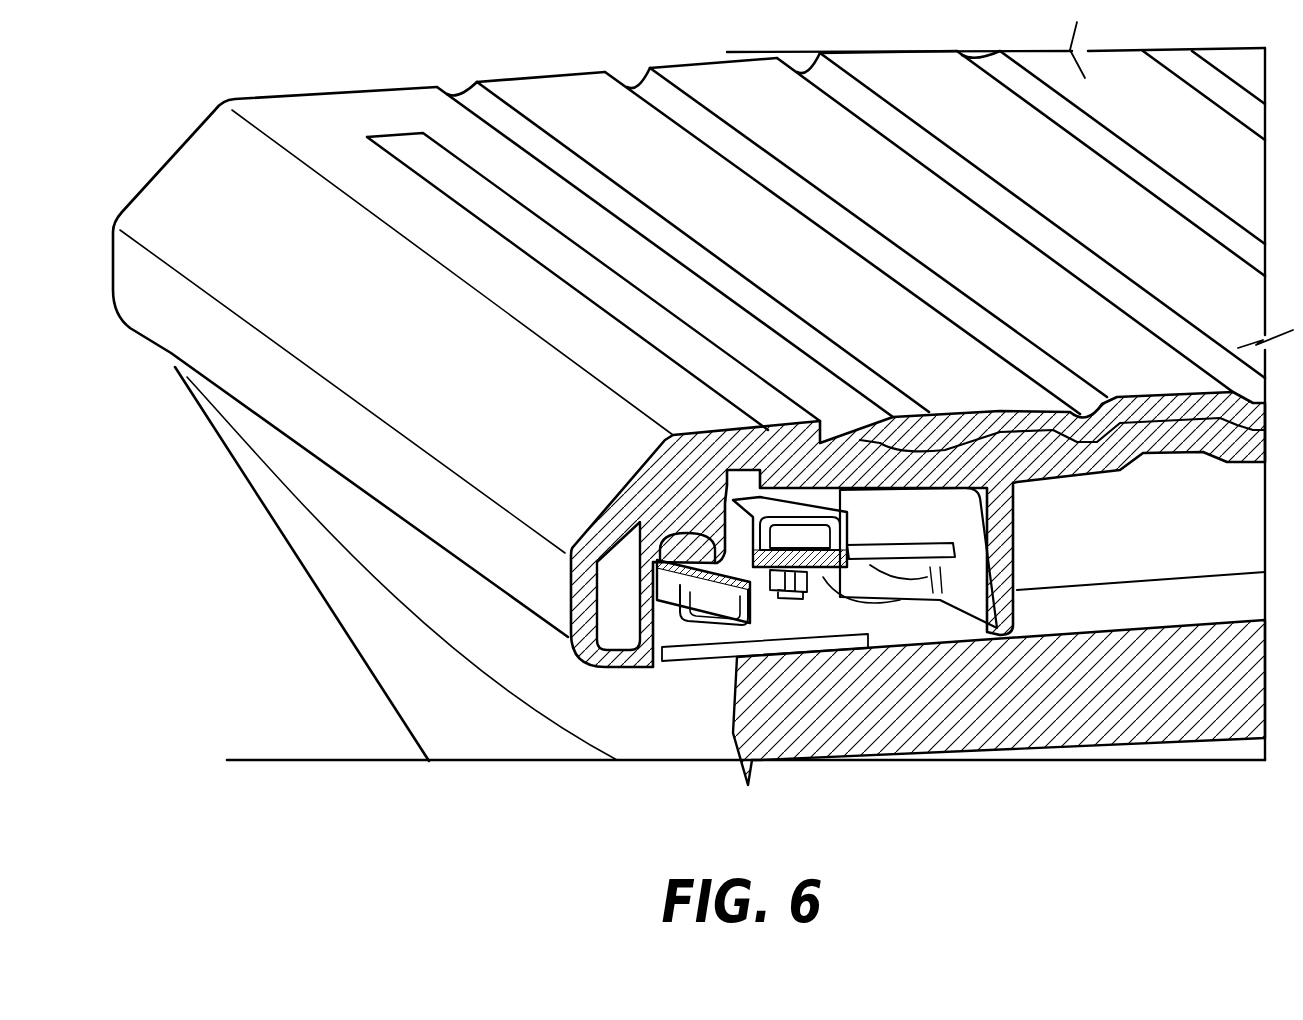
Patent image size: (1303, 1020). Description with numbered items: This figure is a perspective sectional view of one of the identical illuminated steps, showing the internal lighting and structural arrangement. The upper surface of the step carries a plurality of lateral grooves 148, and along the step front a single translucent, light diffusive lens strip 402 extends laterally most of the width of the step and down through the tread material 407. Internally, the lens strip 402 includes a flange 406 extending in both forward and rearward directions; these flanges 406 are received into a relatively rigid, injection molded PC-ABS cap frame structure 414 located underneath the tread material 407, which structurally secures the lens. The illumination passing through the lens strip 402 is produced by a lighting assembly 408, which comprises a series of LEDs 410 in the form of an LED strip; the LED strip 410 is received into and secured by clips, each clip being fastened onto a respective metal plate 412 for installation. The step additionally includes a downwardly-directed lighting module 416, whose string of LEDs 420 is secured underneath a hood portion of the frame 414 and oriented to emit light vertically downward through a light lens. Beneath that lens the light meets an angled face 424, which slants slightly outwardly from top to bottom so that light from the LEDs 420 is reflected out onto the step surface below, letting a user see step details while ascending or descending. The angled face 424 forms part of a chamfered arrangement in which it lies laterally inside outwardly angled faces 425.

The lateral grooves 148 is at (522, 128).
The lens strip 402 is at (422, 157).
The flange 406 is at (730, 478).
The tread material 407 is at (612, 530).
The lighting assembly 408 is at (784, 428).
The LEDs 410 is at (805, 528).
The metal plate 412 is at (887, 577).
The cap frame structure 414 is at (678, 510).
The downwardly-directed lighting module 416 is at (705, 652).
The LEDs 420 is at (745, 618).
The angled face 424 is at (527, 674).
The outwardly angled faces 425 is at (350, 519).